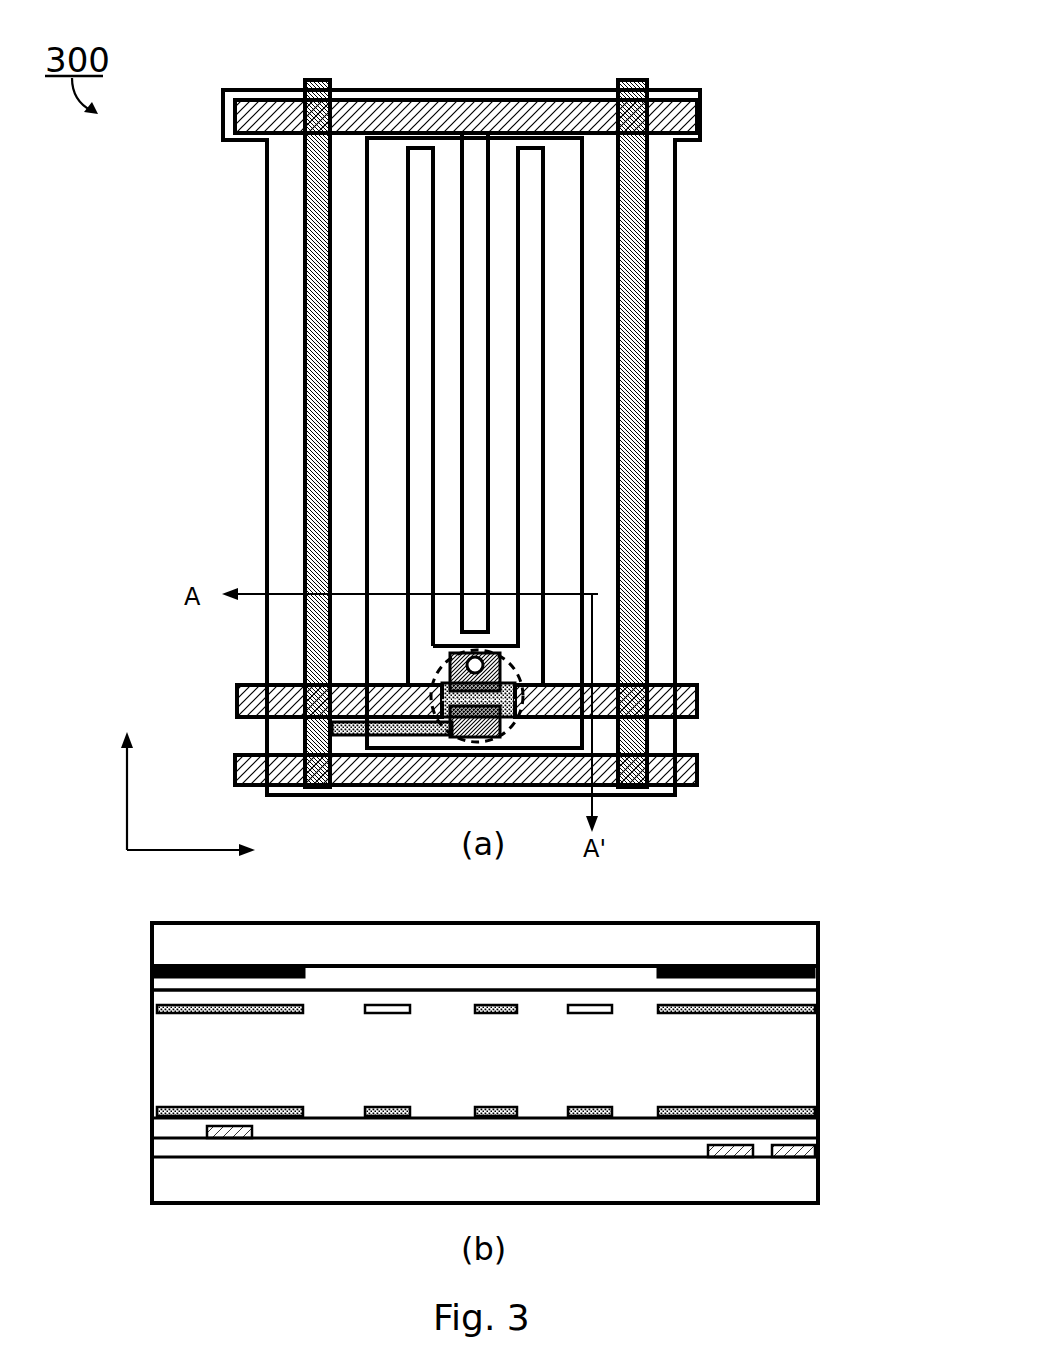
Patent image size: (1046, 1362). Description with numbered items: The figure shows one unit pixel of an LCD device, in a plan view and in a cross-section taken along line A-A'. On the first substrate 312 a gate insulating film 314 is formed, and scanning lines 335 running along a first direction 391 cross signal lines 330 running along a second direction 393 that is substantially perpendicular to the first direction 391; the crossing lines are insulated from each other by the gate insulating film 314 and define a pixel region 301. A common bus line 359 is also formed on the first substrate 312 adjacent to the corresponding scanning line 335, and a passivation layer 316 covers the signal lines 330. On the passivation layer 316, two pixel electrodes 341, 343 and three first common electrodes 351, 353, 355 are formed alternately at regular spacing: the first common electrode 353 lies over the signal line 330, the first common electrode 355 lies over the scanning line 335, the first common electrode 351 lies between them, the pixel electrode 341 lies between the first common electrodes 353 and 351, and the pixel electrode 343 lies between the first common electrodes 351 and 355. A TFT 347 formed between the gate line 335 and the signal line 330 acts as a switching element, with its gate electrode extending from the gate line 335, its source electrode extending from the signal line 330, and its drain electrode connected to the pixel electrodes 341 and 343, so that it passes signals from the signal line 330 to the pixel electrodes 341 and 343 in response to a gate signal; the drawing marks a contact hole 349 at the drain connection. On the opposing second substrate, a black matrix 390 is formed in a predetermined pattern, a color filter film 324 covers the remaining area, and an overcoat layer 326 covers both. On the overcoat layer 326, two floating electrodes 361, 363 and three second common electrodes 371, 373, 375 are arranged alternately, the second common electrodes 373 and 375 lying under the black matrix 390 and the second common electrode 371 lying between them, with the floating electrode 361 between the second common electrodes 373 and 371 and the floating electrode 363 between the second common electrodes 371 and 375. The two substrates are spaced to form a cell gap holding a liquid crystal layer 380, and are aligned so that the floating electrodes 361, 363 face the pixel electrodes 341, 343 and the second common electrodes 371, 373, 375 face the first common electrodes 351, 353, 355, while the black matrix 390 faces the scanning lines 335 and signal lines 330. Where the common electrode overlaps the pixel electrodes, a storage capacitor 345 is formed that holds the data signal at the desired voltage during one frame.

The pixel region 301 is at (386, 486).
The first substrate 312 is at (635, 1178).
The gate insulating film 314 is at (553, 1150).
The passivation layer 316 is at (352, 1128).
The color filter film 324 is at (589, 988).
The overcoat layer 326 is at (460, 998).
The signal line 330 is at (303, 415).
The scanning line 335 is at (700, 708).
The pixel electrode 341 is at (423, 222).
The pixel electrode 343 is at (528, 232).
The storage capacitor 345 is at (490, 112).
The TFT 347 is at (530, 697).
The contact hole 349 is at (483, 655).
The first common electrode 351 is at (475, 340).
The first common electrode 353 is at (288, 325).
The first common electrode 355 is at (662, 410).
The common bus line 359 is at (682, 117).
The floating electrode 361 is at (396, 1015).
The floating electrode 363 is at (598, 1015).
The second common electrode 371 is at (490, 1015).
The second common electrode 373 is at (289, 1015).
The second common electrode 375 is at (718, 1015).
The liquid crystal layer 380 is at (170, 1069).
The black matrix 390 is at (288, 967).
The first direction 391 is at (125, 774).
The second direction 393 is at (760, 888).